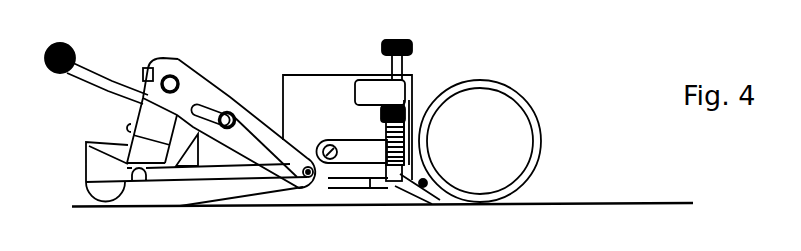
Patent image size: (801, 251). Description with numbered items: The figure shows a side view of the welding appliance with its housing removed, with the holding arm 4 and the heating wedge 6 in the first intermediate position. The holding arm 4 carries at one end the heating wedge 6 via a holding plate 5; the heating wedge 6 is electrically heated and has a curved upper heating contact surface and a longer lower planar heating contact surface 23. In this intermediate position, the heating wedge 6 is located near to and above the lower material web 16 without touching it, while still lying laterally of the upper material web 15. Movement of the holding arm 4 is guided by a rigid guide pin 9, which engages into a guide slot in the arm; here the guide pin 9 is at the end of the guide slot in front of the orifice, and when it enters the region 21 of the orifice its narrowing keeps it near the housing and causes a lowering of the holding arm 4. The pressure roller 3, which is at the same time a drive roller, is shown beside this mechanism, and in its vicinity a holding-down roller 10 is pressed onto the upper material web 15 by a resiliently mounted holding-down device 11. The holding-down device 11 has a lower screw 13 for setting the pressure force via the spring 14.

The pressure roller 3 is at (522, 127).
The holding arm 4 is at (248, 107).
The holding plate 5 is at (355, 186).
The heating wedge 6 is at (398, 197).
The guide pin 9 is at (227, 111).
The holding-down roller 10 is at (447, 205).
The holding-down device 11 is at (377, 90).
The lower screw 13 is at (410, 6).
The spring 14 is at (417, 120).
The upper material web 15 is at (247, 200).
The lower material web 16 is at (288, 207).
The region of the orifice 21 is at (174, 58).
The lower planar heating contact surface 23 is at (402, 200).